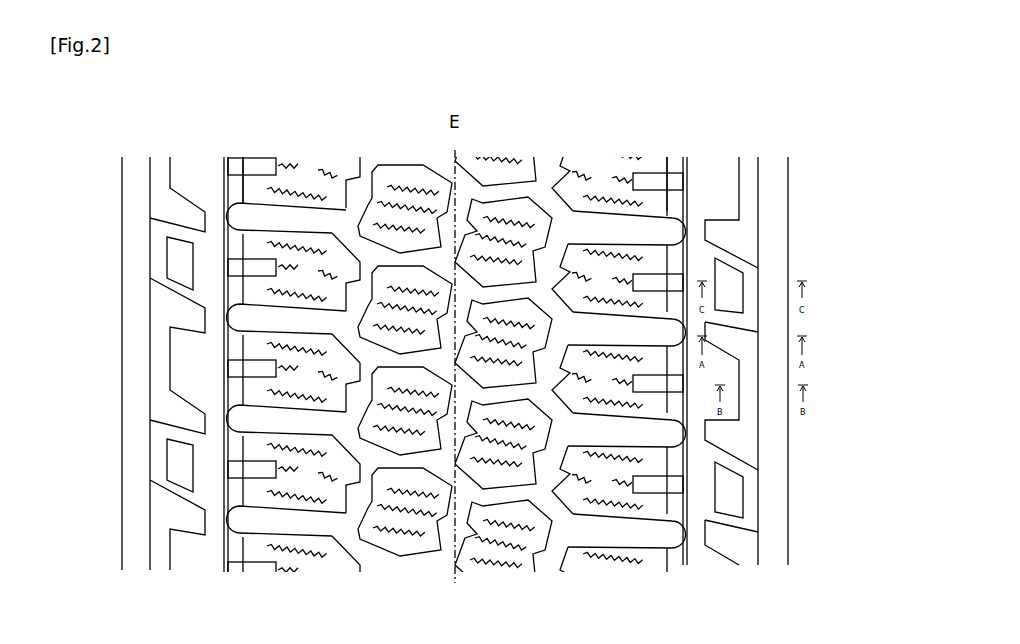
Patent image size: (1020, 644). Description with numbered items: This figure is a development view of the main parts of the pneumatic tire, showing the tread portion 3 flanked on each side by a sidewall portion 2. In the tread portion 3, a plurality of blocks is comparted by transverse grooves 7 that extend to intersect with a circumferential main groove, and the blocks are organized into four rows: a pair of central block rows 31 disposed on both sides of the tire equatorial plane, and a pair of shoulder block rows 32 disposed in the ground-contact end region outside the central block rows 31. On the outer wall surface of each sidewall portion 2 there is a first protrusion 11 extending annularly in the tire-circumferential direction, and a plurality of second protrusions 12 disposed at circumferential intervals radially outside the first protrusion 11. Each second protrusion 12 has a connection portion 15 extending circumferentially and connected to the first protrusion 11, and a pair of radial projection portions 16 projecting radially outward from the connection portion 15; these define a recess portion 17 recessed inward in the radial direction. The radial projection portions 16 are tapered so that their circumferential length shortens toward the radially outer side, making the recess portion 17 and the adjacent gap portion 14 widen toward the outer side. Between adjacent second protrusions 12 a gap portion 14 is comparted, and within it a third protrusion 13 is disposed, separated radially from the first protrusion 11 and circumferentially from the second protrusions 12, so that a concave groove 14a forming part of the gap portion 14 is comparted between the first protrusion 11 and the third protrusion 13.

The sidewall portion 2 is at (165, 152).
The tread portion 3 is at (500, 148).
The transverse groove 7 is at (245, 515).
The first protrusion 11 is at (130, 546).
The second protrusion 12 is at (451, 363).
The third protrusion 13 is at (180, 265).
The gap portion 14 is at (165, 238).
The concave groove 14a is at (752, 318).
The connection portion 15 is at (160, 357).
The radial projection portion 16 is at (185, 322).
The recess portion 17 is at (175, 352).
The central block row 31 is at (400, 540).
The shoulder block row 32 is at (320, 525).